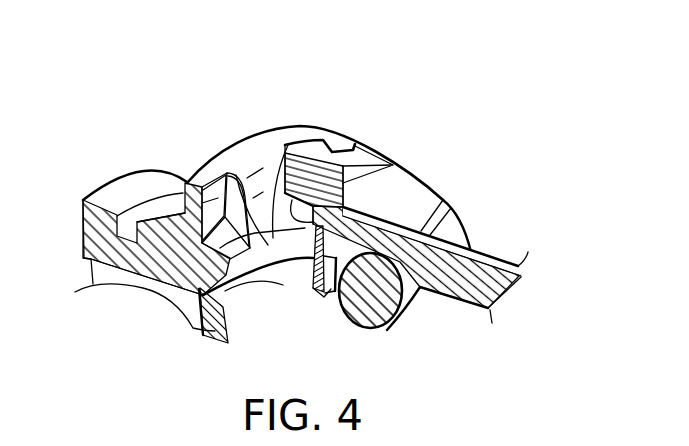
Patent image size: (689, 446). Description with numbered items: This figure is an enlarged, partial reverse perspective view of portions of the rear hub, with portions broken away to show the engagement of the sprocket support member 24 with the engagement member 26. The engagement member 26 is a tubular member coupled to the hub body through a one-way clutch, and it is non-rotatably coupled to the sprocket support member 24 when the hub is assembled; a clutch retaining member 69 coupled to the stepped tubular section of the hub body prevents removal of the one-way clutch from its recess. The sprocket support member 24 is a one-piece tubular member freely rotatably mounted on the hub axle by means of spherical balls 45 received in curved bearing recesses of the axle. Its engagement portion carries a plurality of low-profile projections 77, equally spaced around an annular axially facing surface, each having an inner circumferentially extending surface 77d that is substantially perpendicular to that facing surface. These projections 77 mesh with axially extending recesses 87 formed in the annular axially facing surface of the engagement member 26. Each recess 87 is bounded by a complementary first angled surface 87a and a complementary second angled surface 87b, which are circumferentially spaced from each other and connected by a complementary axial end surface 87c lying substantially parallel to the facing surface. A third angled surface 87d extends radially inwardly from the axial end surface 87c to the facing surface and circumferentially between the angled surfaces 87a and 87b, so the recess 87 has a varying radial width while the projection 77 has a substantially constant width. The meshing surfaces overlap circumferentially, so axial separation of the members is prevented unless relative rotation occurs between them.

The engagement member 26 is at (177, 151).
The recesses 87 is at (231, 171).
The complementary first angled surface 87a is at (252, 224).
The complementary second angled surface 87b is at (284, 141).
The complementary axial end surface 87c is at (193, 248).
The third angled surface 87d is at (197, 240).
The projections 77 is at (337, 139).
The inner circumferentially extending surface 77d is at (395, 165).
The sprocket support member 24 is at (489, 246).
The spherical balls 45 is at (388, 331).
The clutch retaining member 69 is at (215, 331).